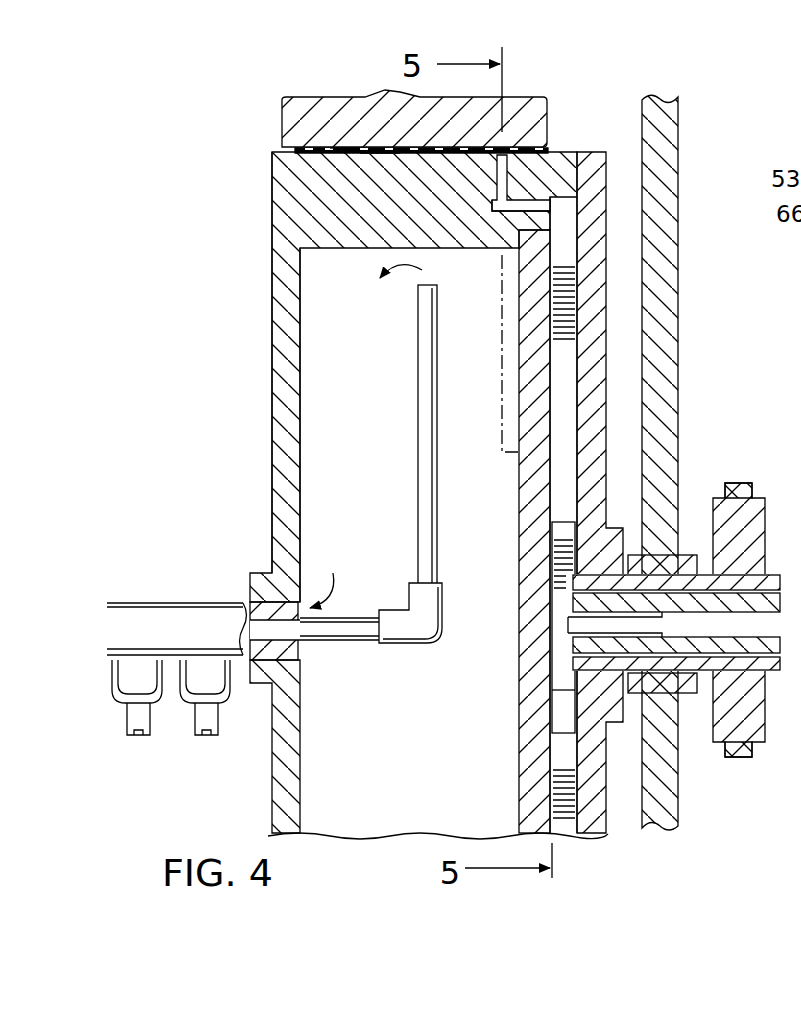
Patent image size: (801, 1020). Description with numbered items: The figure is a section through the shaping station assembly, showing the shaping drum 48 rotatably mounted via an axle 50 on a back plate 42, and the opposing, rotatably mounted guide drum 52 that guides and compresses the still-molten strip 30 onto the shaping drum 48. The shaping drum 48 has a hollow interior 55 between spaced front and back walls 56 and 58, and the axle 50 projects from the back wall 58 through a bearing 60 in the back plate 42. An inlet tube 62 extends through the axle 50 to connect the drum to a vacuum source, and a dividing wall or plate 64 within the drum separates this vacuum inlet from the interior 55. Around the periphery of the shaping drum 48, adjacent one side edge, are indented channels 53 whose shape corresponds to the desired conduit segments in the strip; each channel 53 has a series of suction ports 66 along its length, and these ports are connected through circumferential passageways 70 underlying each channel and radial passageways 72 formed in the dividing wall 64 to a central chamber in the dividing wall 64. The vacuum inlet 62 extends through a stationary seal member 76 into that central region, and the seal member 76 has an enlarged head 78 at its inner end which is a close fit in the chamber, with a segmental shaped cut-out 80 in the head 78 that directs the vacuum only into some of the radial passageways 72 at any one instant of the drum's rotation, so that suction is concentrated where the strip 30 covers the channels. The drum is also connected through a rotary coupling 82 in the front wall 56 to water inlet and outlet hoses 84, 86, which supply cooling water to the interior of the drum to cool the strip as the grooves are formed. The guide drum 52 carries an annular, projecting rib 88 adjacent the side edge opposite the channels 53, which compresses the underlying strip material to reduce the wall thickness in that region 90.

The strip 30 is at (380, 147).
The back plate 42 is at (676, 212).
The shaping drum 48 is at (268, 376).
The axle 50 is at (711, 582).
The guide drum 52 is at (520, 106).
The indented channels 53 is at (396, 158).
The hollow interior 55 is at (366, 447).
The front wall 56 is at (280, 313).
The back wall 58 is at (596, 316).
The bearing 60 is at (637, 555).
The inlet tube 62 is at (548, 626).
The dividing wall 64 is at (530, 466).
The suction ports 66 is at (508, 180).
The circumferential passageways 70 is at (510, 208).
The radial passageways 72 is at (563, 232).
The seal member 76 is at (711, 642).
The enlarged head 78 is at (546, 683).
The segmental shaped cut-out 80 is at (550, 566).
The rotary coupling 82 is at (228, 602).
The water inlet hose 84 is at (150, 716).
The water outlet hose 86 is at (220, 716).
The annular projecting rib 88 is at (337, 147).
The region of reduced wall thickness 90 is at (342, 150).